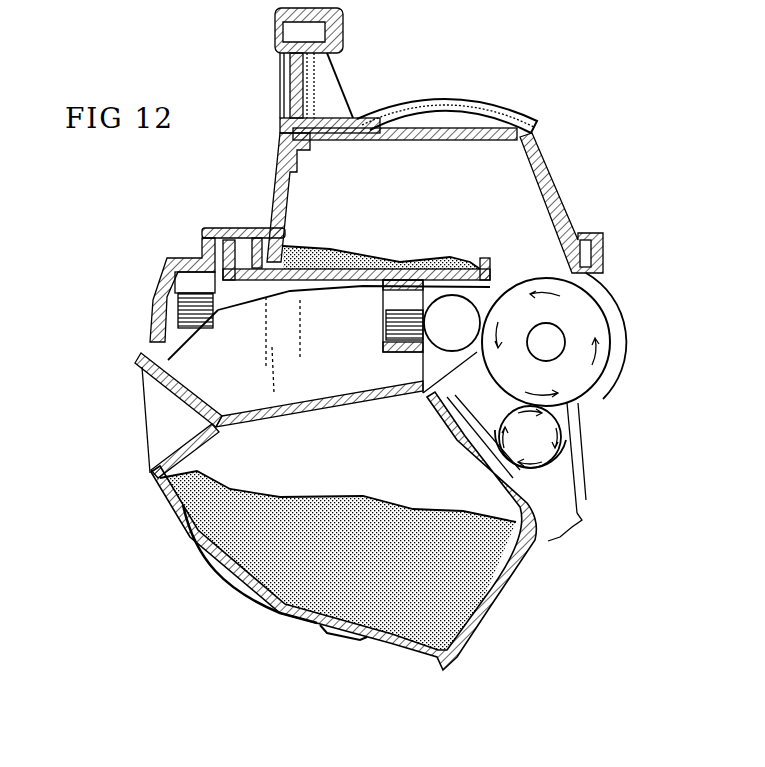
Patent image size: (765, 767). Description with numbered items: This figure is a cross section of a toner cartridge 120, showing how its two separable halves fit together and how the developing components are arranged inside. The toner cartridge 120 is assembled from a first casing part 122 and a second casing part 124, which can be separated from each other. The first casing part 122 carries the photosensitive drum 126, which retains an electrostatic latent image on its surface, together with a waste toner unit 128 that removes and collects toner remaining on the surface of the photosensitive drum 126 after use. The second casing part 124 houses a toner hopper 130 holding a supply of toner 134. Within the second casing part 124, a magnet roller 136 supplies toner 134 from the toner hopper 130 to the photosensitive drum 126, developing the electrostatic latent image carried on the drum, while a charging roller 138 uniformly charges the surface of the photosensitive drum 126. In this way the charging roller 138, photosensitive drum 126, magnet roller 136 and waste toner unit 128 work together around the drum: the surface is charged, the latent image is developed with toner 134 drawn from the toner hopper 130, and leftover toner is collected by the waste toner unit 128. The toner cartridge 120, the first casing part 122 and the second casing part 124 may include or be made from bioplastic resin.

The toner cartridge 120 is at (347, 665).
The first casing part 122 is at (555, 188).
The second casing part 124 is at (507, 587).
The photosensitive drum 126 is at (600, 314).
The waste toner unit 128 is at (398, 187).
The toner hopper 130 is at (357, 472).
The toner 134 is at (340, 558).
The magnet roller 136 is at (548, 438).
The charging roller 138 is at (468, 330).